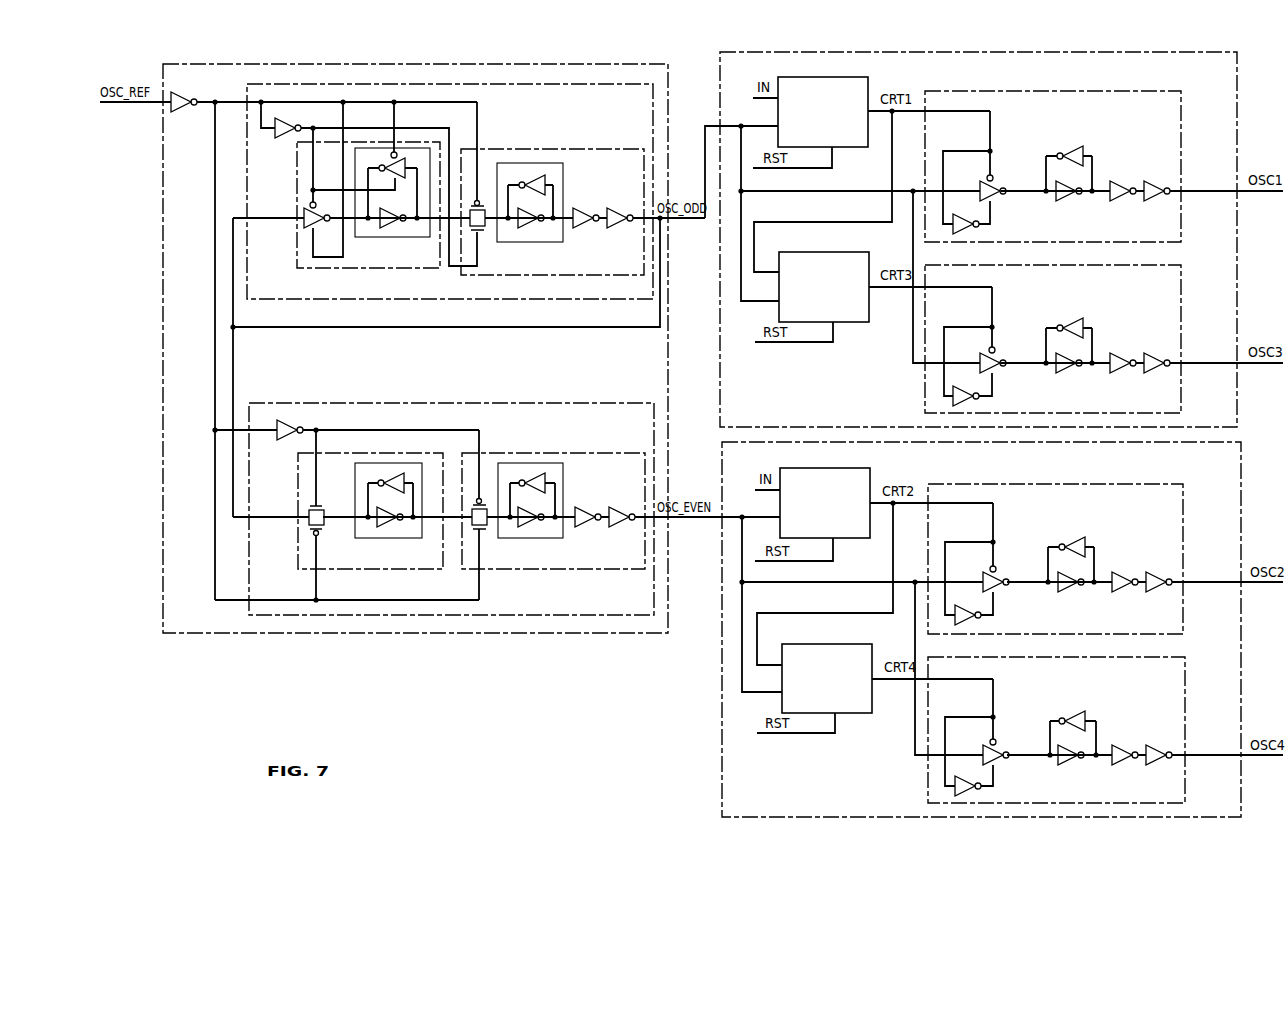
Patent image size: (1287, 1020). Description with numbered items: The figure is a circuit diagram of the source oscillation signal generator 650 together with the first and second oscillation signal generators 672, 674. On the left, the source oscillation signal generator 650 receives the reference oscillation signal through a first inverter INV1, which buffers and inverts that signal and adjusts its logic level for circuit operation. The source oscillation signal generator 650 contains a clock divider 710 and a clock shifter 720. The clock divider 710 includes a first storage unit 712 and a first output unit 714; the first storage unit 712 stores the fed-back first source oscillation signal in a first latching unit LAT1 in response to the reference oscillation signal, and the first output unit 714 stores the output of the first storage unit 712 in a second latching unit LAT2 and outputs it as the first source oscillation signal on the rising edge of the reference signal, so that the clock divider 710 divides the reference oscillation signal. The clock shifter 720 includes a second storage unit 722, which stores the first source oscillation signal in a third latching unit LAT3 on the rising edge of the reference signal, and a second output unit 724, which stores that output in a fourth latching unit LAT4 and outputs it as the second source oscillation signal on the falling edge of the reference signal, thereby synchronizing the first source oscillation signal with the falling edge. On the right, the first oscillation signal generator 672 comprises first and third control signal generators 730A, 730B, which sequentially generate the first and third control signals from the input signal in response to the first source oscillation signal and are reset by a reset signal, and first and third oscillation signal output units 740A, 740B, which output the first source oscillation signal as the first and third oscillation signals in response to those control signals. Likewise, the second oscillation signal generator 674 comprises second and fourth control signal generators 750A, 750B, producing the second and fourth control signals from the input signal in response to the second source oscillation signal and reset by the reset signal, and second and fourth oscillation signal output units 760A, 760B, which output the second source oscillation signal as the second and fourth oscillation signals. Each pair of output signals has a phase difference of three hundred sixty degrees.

The source oscillation signal generator 650 is at (627, 633).
The clock divider 710 is at (610, 299).
The first storage unit 712 is at (397, 268).
The first output unit 714 is at (600, 149).
The clock shifter 720 is at (615, 403).
The second storage unit 722 is at (400, 453).
The second output unit 724 is at (602, 453).
The first oscillation signal generator 672 is at (1238, 75).
The second oscillation signal generator 674 is at (1242, 466).
The first control signal generator 730A is at (827, 77).
The third control signal generator 730B is at (827, 252).
The first oscillation signal output unit 740A is at (1183, 110).
The third oscillation signal output unit 740B is at (1183, 284).
The second control signal generator 750A is at (830, 468).
The fourth control signal generator 750B is at (830, 644).
The second oscillation signal output unit 760A is at (1185, 502).
The fourth oscillation signal output unit 760B is at (1187, 681).
The first inverter INV1 is at (184, 96).
The first latching unit LAT1 is at (387, 237).
The second latching unit LAT2 is at (515, 242).
The third latching unit LAT3 is at (373, 538).
The fourth latching unit LAT4 is at (515, 538).